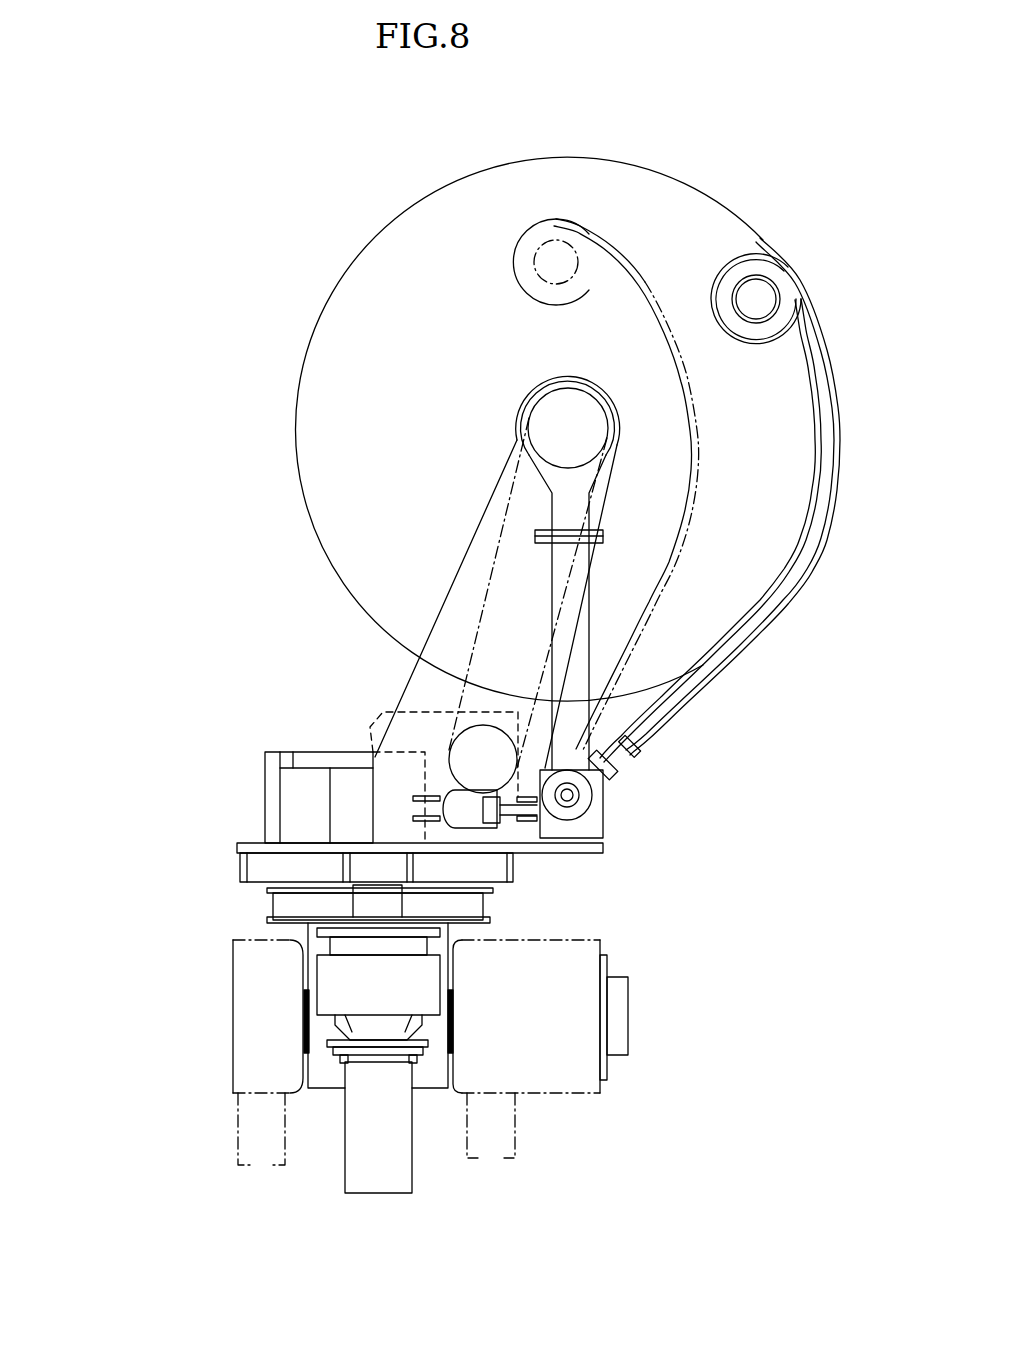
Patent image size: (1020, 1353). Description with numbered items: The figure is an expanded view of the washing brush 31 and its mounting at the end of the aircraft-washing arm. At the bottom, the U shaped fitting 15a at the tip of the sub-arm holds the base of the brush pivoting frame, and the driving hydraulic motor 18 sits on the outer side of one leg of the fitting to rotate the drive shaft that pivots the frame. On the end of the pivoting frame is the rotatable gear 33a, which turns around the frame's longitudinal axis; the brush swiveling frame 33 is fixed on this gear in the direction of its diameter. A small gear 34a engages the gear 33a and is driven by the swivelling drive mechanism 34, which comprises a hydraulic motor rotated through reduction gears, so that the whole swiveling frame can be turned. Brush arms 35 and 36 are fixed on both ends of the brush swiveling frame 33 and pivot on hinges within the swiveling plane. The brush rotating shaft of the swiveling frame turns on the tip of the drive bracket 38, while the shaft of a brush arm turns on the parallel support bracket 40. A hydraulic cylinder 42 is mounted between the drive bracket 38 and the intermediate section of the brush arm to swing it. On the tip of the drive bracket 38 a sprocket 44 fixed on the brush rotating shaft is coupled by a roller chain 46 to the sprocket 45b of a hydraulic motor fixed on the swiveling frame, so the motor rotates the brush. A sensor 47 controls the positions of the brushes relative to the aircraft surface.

The brush arm 35 is at (569, 396).
The brush swiveling frame 33 is at (529, 429).
The brush arm 36 is at (635, 163).
The washing brush 31 is at (792, 220).
The sensor 47 is at (700, 470).
The sprocket 44 is at (585, 408).
The support bracket 40 is at (592, 620).
The drive bracket 38 is at (466, 553).
The roller chain 46 is at (485, 603).
The sprocket 45b is at (498, 722).
The hydraulic cylinder 42 is at (468, 820).
The gear 33a is at (513, 862).
The small gear 34a is at (345, 872).
The swivelling drive mechanism 34 is at (420, 1120).
The U shaped fitting 15a is at (222, 1114).
The driving hydraulic motor 18 is at (592, 940).